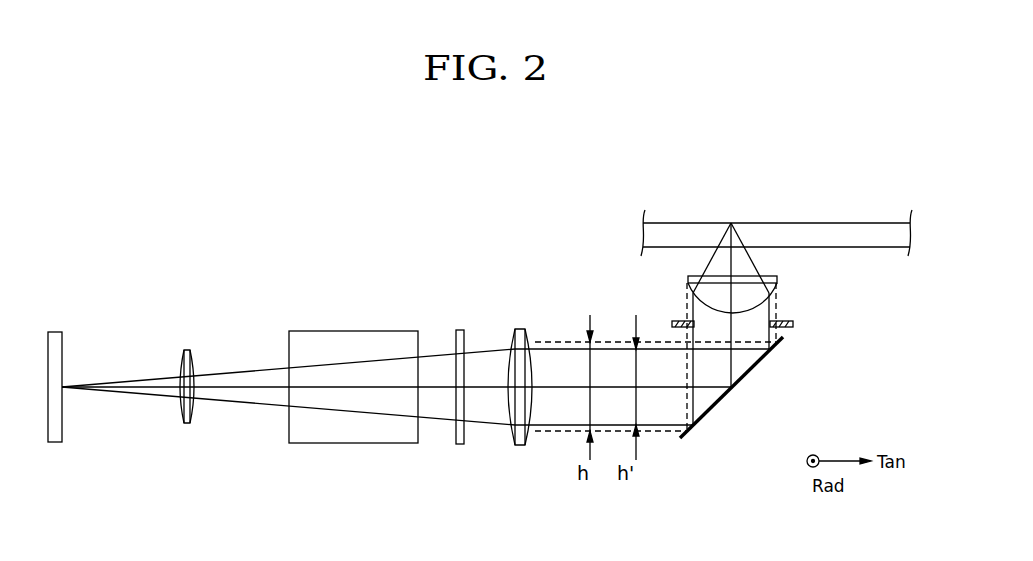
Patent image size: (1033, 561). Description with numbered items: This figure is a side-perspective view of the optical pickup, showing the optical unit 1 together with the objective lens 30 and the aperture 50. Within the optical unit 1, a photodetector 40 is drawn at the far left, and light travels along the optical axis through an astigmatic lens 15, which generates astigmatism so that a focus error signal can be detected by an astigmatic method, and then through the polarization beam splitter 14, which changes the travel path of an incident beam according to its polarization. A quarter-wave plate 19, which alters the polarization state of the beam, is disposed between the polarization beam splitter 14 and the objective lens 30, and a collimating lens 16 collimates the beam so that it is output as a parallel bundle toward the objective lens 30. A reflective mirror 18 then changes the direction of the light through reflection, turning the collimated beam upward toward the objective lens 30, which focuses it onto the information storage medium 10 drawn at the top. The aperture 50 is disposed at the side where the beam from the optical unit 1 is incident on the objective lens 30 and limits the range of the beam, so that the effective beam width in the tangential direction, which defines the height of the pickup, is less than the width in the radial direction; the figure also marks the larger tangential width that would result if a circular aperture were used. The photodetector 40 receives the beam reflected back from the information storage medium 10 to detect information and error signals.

The optical unit 1 is at (340, 274).
The information storage medium 10 is at (826, 228).
The polarization beam splitter 14 is at (354, 435).
The astigmatic lens 15 is at (187, 423).
The collimating lens 16 is at (519, 440).
The reflective mirror 18 is at (705, 417).
The quarter-wave plate 19 is at (461, 440).
The objective lens 30 is at (703, 297).
The photodetector 40 is at (55, 442).
The aperture 50 is at (791, 328).